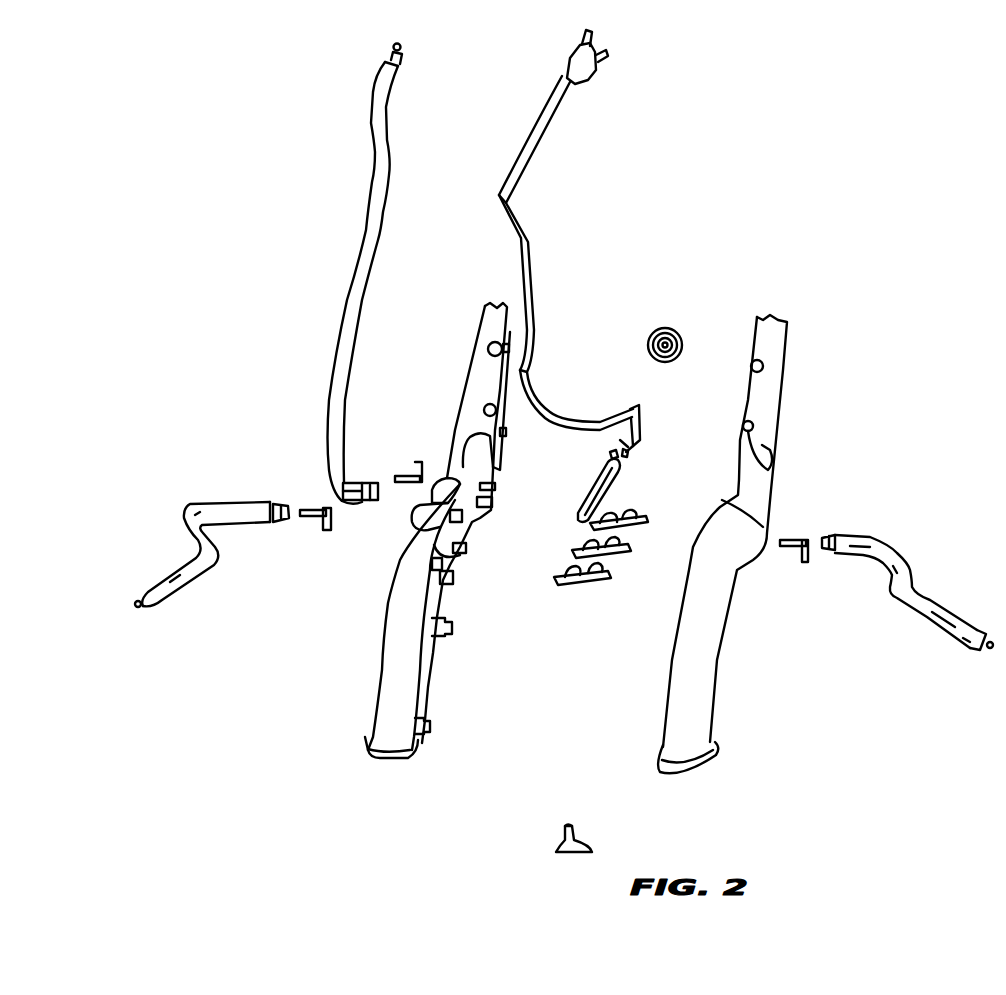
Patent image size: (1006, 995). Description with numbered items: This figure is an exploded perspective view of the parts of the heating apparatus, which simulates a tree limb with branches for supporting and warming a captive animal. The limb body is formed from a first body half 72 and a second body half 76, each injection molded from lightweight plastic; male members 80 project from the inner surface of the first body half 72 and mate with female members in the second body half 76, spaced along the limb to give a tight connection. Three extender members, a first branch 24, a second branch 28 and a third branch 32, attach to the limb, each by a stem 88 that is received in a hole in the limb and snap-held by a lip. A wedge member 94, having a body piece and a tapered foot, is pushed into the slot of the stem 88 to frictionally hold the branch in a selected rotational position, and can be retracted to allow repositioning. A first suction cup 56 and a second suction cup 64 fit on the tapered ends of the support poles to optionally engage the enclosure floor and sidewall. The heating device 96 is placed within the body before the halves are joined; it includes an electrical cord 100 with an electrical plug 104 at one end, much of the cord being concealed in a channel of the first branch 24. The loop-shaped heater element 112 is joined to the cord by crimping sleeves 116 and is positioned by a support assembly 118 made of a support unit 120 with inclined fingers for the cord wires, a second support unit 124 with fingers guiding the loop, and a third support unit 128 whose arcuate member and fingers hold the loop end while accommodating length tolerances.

The first branch 24 is at (348, 311).
The second branch 28 is at (158, 582).
The third branch 32 is at (950, 618).
The first suction cup 56 is at (580, 840).
The second suction cup 64 is at (662, 328).
The first body half 72 is at (393, 670).
The second body half 76 is at (700, 692).
The male members 80 is at (453, 630).
The stem 88 is at (362, 482).
The wedge member 94 is at (421, 457).
The heating device 96 is at (572, 263).
The electrical cord 100 is at (578, 100).
The electrical plug 104 is at (600, 68).
The heater element 112 is at (620, 482).
The crimping sleeves 116 is at (608, 456).
The support assembly 118 is at (562, 555).
The support unit 120 is at (643, 524).
The second support unit 124 is at (624, 554).
The third support unit 128 is at (600, 588).